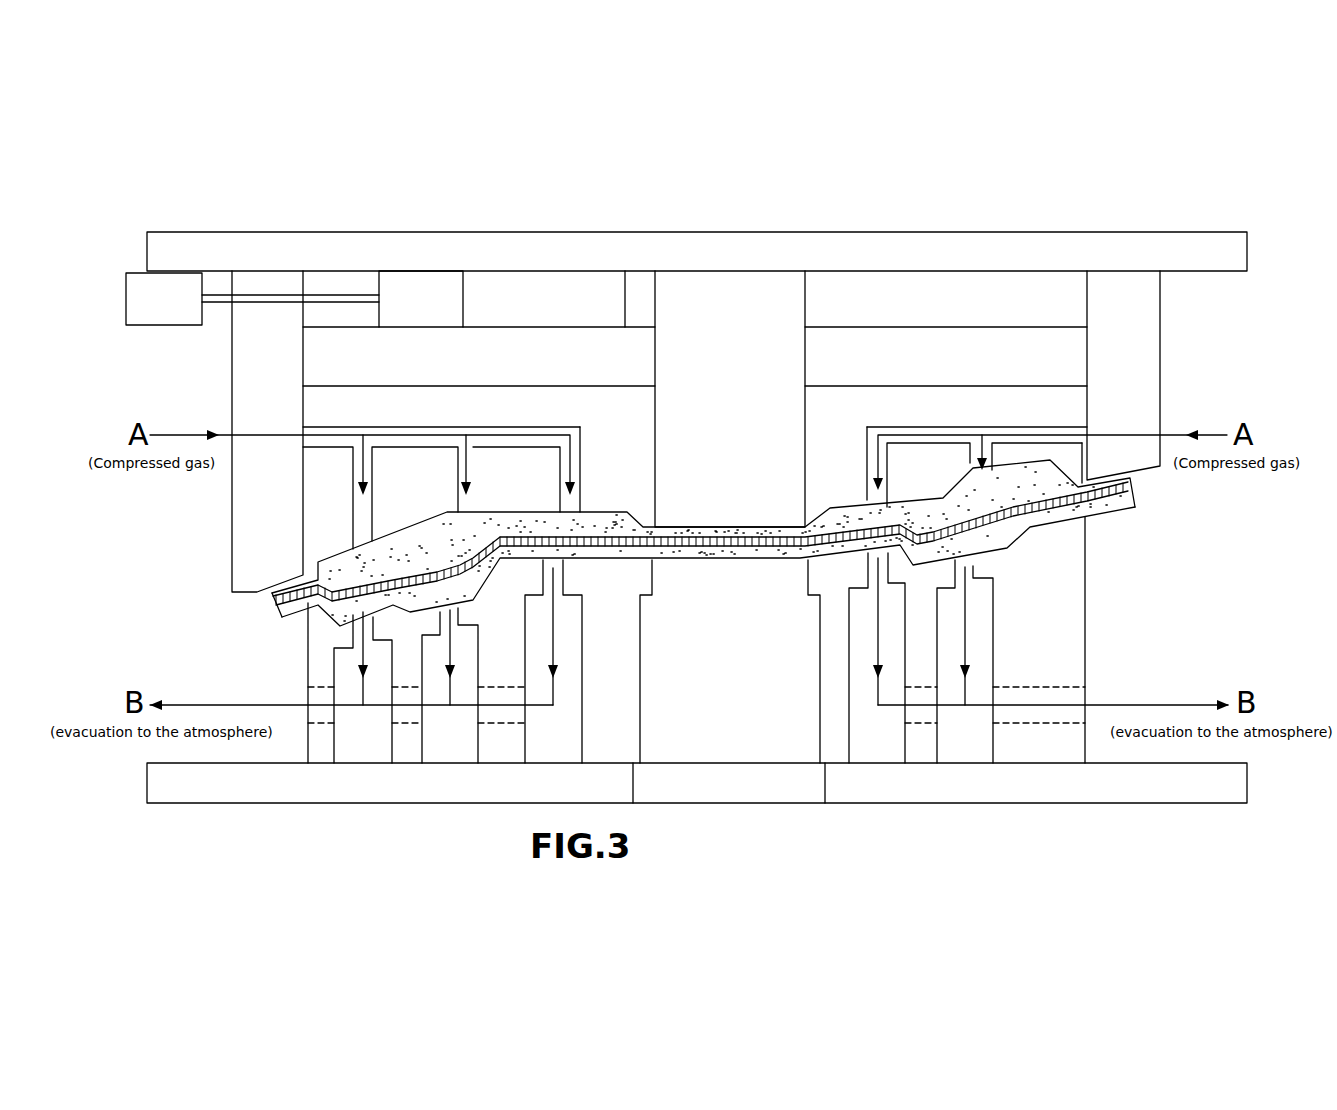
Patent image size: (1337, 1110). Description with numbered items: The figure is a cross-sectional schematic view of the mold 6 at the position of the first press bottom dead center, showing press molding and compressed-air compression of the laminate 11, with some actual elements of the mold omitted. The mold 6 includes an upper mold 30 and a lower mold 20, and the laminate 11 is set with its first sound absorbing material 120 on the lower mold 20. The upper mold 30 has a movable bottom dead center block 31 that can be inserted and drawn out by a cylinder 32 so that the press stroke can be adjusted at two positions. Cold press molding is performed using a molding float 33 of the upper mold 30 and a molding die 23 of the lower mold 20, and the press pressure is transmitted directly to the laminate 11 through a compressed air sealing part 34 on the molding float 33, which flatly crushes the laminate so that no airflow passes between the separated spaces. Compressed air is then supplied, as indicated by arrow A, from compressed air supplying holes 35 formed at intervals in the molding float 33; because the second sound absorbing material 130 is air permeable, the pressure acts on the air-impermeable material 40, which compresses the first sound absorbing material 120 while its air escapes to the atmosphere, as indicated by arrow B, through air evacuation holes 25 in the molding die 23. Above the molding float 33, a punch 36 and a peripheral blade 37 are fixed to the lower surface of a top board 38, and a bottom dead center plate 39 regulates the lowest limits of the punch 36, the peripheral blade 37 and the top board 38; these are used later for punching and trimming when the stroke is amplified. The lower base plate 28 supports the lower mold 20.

The mold 6 is at (166, 182).
The laminate 11 is at (1135, 507).
The lower mold 20 is at (303, 640).
The molding die 23 is at (1060, 574).
The air evacuation holes 25 is at (968, 575).
The lower base plate 28 is at (190, 793).
The upper mold 30 is at (230, 567).
The movable bottom dead center block 31 is at (425, 302).
The cylinder 32 is at (185, 293).
The molding float 33 is at (590, 418).
The compressed air sealing part 34 is at (647, 522).
The compressed air supplying holes 35 is at (870, 415).
The punch 36 is at (720, 312).
The peripheral blade 37 is at (253, 543).
The top board 38 is at (185, 253).
The bottom dead center plate 39 is at (505, 362).
The air-impermeable material 40 is at (742, 547).
The first sound absorbing material 120 is at (692, 562).
The second sound absorbing material 130 is at (715, 530).